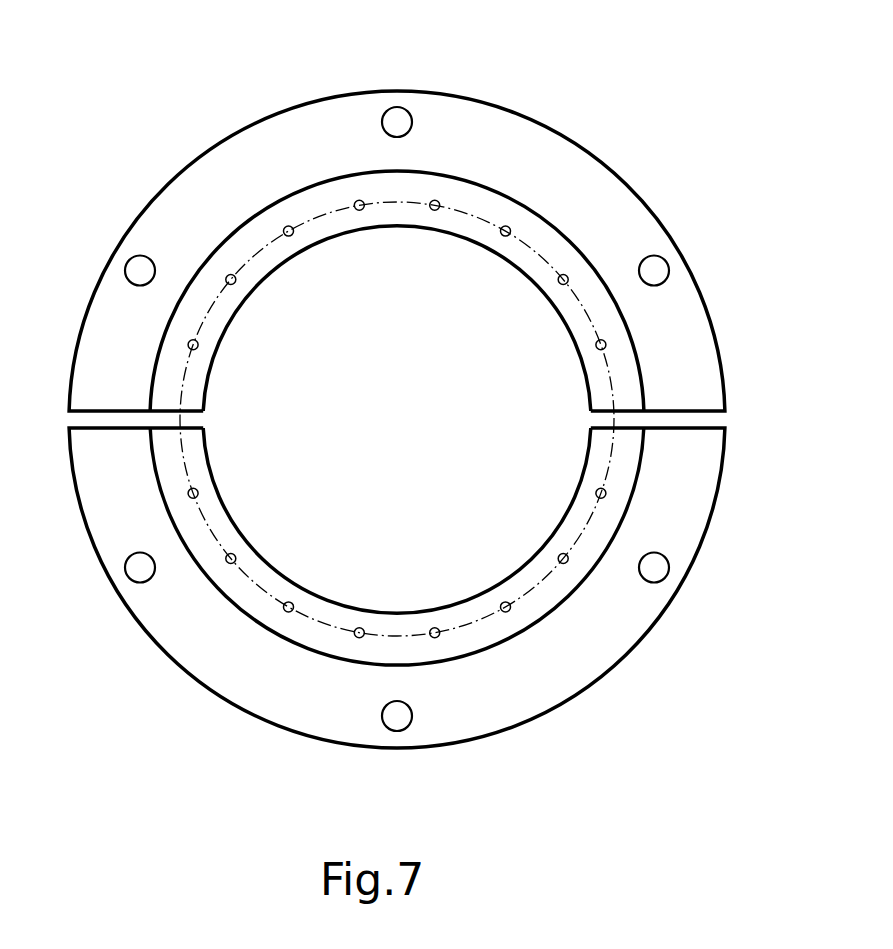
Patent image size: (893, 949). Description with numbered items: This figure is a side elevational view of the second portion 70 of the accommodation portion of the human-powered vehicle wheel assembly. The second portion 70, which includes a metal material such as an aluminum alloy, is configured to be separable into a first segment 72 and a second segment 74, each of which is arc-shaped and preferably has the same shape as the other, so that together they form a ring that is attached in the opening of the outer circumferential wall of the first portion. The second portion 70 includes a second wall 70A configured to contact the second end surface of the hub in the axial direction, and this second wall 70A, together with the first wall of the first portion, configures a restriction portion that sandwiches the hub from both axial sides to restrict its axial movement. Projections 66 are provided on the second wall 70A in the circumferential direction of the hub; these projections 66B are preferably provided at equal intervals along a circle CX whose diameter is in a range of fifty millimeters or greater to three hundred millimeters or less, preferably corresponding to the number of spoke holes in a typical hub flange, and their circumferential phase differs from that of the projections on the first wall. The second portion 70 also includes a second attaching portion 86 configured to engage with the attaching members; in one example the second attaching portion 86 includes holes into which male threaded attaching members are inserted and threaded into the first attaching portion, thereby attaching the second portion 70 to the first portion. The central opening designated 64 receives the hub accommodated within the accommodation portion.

The second portion 70 is at (612, 47).
The first segment 72 is at (586, 166).
The second segment 74 is at (556, 690).
The second wall 70A is at (472, 236).
The second attaching portion 86 is at (389, 107).
The circle CX is at (263, 248).
The projections 66B is at (226, 277).
The projections 66 is at (397, 563).
The bore / shaft space 64 is at (315, 427).